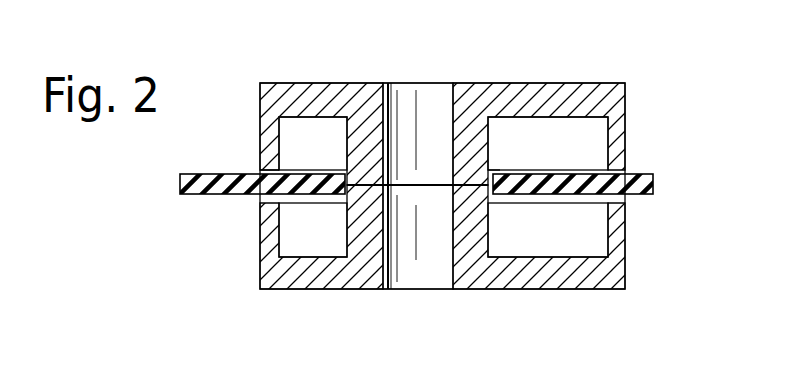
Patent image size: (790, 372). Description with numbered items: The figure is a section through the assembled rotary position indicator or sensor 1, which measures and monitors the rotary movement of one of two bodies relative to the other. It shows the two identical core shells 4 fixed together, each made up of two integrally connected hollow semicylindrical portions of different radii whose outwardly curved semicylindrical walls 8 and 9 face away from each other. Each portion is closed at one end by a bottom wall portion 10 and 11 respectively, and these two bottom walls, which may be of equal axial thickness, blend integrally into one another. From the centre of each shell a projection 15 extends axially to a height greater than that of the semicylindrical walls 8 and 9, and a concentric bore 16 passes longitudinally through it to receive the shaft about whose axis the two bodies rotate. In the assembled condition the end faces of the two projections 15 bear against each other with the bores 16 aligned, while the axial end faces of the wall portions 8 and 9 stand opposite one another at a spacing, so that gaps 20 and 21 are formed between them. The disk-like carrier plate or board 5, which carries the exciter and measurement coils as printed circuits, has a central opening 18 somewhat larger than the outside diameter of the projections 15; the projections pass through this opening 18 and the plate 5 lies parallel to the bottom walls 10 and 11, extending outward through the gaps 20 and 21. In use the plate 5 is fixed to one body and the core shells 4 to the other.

The sensor assembly 1 is at (262, 48).
The core shell 4 is at (260, 96).
The carrier plate or board 5 is at (182, 186).
The semicylindrical wall 8 is at (616, 128).
The semicylindrical wall 9 is at (268, 140).
The bottom wall portion 10 is at (568, 97).
The bottom wall portion 11 is at (327, 97).
The projection 15 is at (485, 145).
The bore 16 is at (412, 100).
The central opening 18 is at (493, 173).
The gap 20 is at (633, 171).
The gap 21 is at (258, 172).